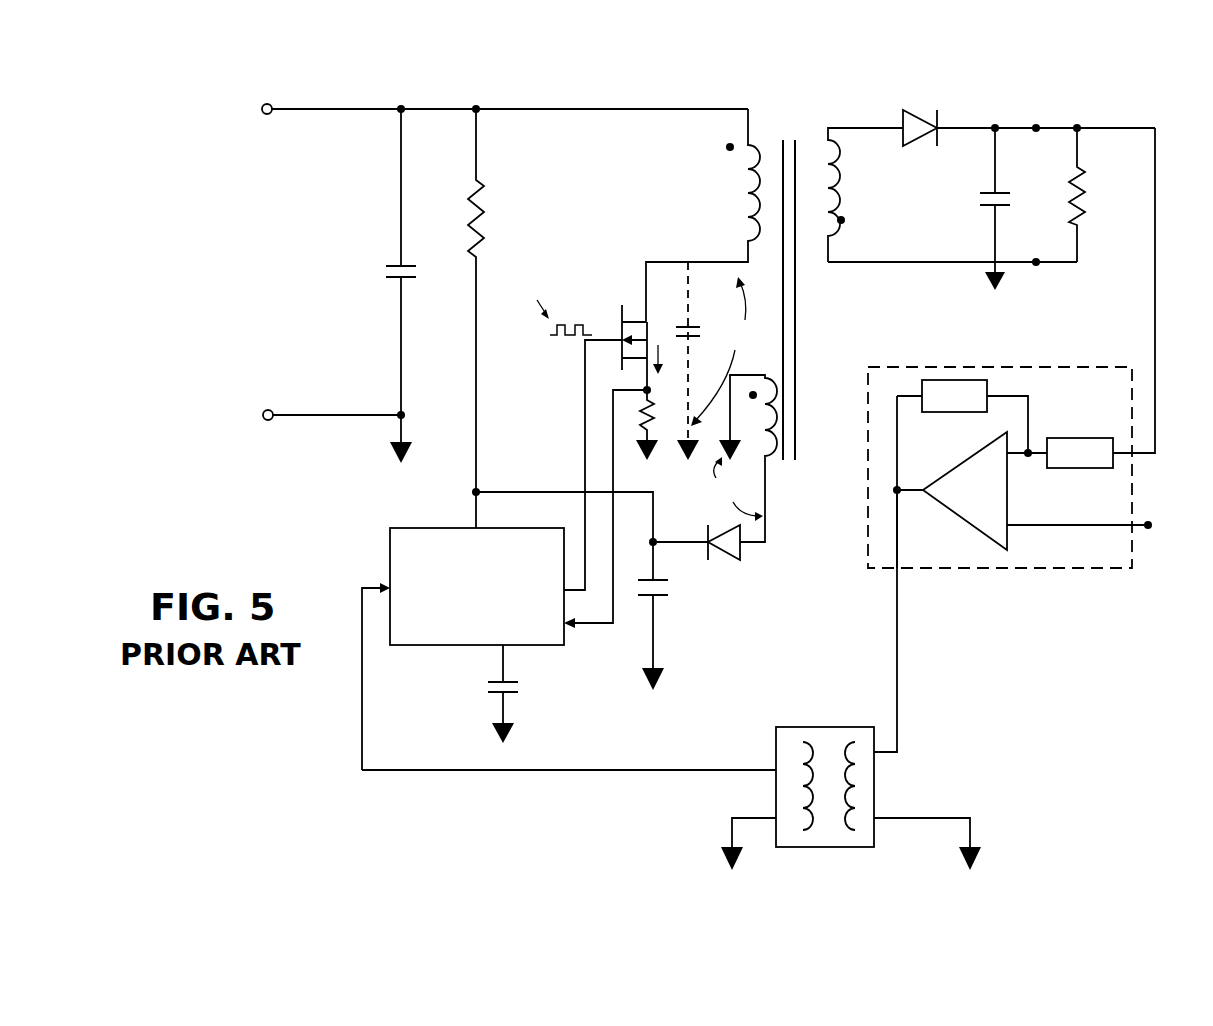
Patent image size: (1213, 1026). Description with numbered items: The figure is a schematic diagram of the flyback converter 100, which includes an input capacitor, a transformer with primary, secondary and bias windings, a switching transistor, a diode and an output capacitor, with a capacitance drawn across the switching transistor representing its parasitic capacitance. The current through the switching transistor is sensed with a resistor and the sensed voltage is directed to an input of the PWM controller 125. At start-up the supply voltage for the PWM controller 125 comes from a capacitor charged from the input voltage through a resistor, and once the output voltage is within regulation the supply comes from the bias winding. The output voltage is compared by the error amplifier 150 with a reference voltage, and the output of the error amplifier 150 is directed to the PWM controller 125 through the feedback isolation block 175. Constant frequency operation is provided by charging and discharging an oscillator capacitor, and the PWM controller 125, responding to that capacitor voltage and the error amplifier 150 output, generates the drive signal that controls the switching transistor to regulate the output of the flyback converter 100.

The flyback converter 100 is at (681, 63).
The PWM controller 125 is at (425, 646).
The error amplifier 150 is at (1115, 564).
The feedback isolation block 175 is at (825, 727).